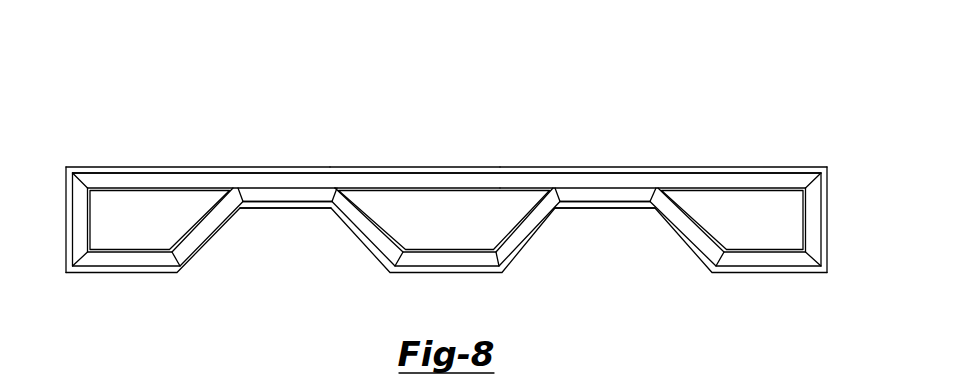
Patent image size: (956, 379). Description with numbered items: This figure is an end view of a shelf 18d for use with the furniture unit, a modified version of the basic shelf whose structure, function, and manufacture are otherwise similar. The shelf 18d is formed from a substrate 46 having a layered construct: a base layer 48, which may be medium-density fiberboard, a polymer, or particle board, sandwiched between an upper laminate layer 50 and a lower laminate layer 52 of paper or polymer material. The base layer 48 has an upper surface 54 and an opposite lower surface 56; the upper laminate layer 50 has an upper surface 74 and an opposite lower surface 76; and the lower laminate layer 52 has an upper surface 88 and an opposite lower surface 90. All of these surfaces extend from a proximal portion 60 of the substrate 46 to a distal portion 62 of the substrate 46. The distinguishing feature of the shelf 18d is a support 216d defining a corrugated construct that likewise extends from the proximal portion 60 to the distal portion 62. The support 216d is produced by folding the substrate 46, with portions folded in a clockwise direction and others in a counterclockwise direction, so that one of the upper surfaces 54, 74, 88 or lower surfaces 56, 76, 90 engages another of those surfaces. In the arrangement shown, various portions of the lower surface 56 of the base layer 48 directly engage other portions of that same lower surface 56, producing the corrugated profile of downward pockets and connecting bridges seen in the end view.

The shelf 18d is at (725, 109).
The substrate 46 is at (257, 167).
The base layer 48 is at (536, 188).
The upper laminate layer 50 is at (595, 167).
The lower laminate layer 52 is at (636, 202).
The upper surface 54 is at (434, 173).
The lower surface 56 is at (273, 188).
The proximal portion 60 is at (66, 189).
The distal portion 62 is at (827, 238).
The upper surface 74 is at (398, 167).
The lower surface 76 is at (306, 202).
The upper surface 88 is at (470, 188).
The lower surface 90 is at (197, 218).
The support 216d is at (153, 296).